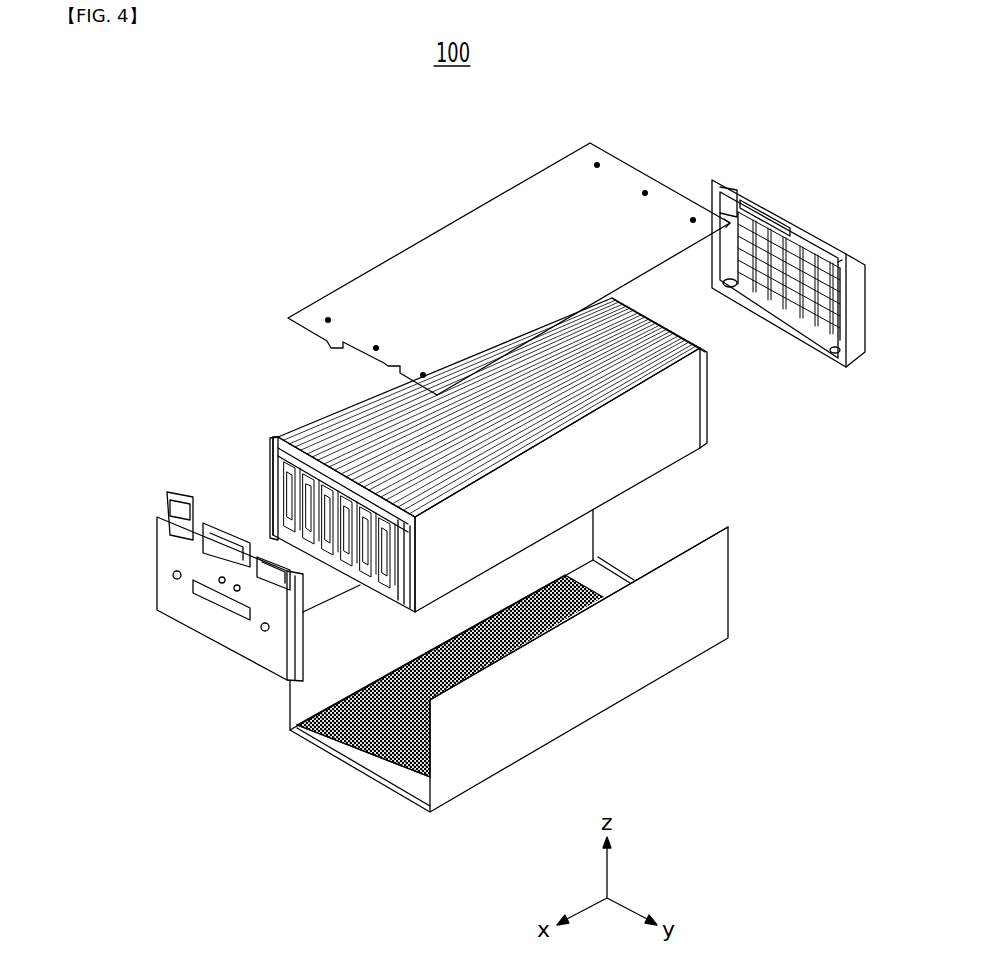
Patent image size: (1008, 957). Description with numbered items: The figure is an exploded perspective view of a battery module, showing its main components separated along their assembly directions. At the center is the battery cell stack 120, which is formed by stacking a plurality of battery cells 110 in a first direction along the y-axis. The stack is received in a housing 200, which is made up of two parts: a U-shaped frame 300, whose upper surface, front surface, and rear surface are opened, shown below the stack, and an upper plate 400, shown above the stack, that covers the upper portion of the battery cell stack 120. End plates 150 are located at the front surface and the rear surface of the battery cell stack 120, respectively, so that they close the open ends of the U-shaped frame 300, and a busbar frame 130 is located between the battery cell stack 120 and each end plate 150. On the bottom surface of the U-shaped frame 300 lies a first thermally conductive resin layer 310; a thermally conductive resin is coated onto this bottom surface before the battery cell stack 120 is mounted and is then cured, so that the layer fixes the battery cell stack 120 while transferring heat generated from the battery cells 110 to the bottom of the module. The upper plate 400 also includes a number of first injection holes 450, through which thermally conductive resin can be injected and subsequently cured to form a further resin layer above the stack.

The battery cell 110 is at (501, 455).
The battery cell stack 120 is at (352, 425).
The busbar frame 130 is at (268, 484).
The end plate 150 is at (727, 181).
The housing 200 is at (797, 853).
The U-shaped frame 300 is at (500, 664).
The first thermally conductive resin layer 310 is at (388, 737).
The upper plate 400 is at (452, 252).
The first injection hole 450 is at (693, 217).